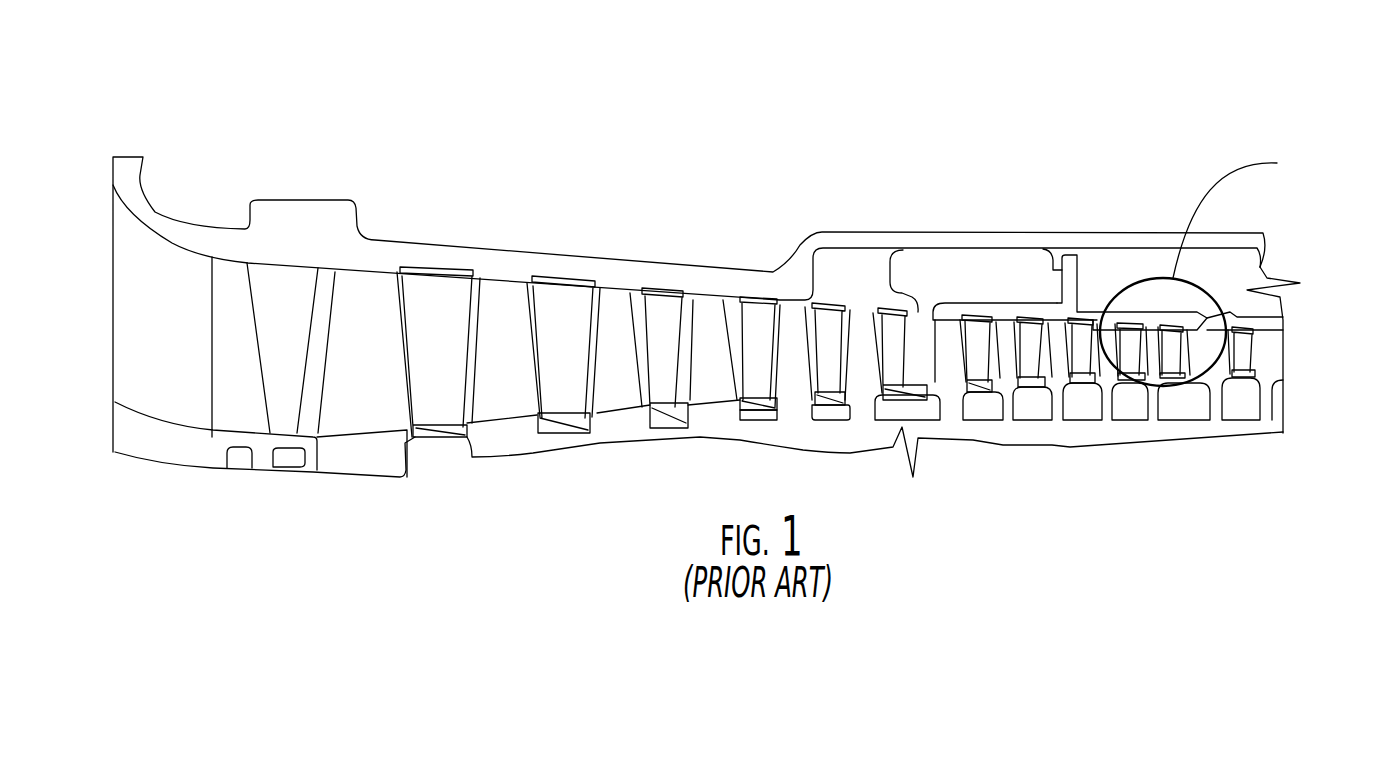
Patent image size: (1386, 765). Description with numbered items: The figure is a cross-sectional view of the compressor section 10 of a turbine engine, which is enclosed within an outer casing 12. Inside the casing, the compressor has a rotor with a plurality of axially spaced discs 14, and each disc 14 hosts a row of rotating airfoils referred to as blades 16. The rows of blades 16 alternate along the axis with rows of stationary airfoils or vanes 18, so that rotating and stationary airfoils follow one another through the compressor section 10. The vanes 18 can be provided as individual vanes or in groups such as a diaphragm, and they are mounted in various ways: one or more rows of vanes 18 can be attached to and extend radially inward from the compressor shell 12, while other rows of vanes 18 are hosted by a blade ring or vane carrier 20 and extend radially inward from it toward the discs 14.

The compressor section 10 is at (236, 98).
The outer casing 12 is at (400, 236).
The discs 14 is at (376, 463).
The blades 16 is at (372, 353).
The vanes 18 is at (295, 343).
The vane carrier 20 is at (1083, 312).